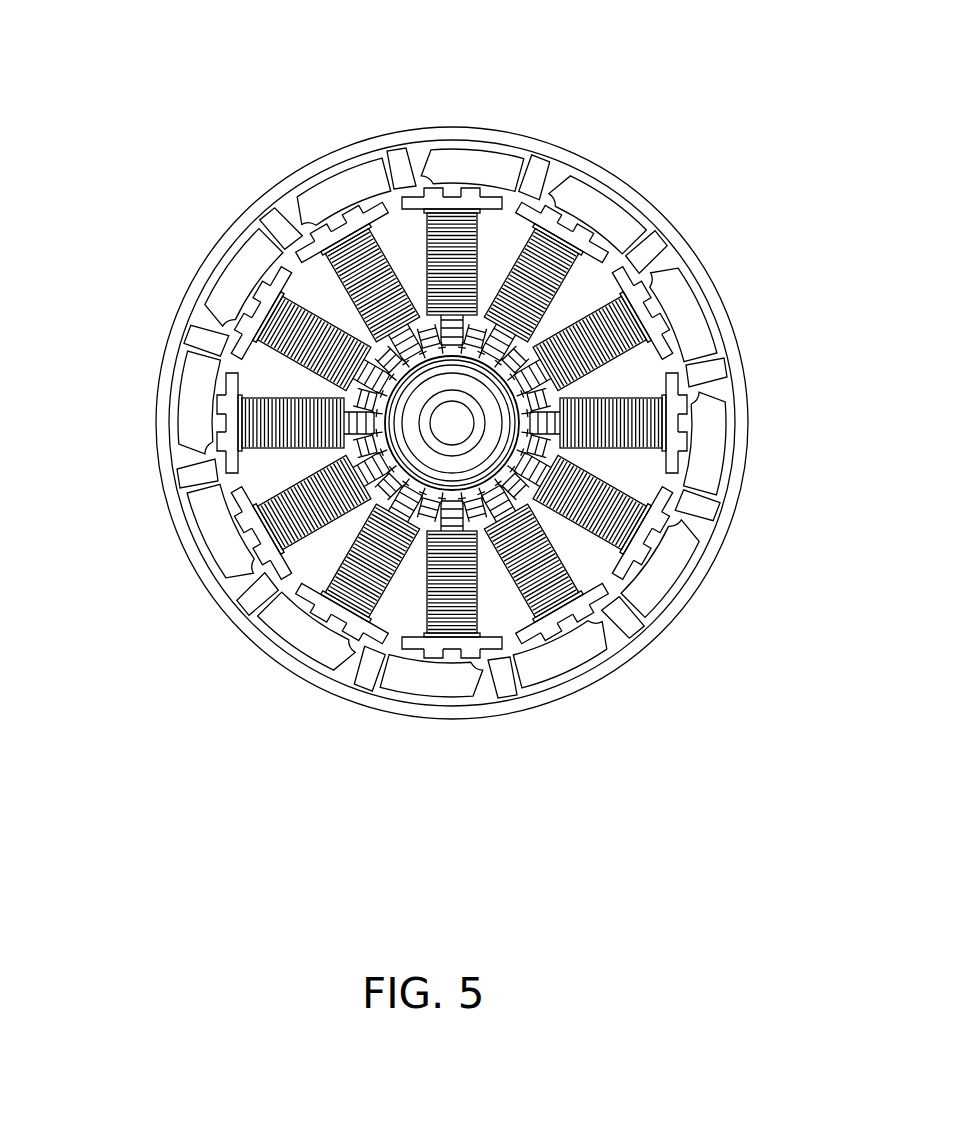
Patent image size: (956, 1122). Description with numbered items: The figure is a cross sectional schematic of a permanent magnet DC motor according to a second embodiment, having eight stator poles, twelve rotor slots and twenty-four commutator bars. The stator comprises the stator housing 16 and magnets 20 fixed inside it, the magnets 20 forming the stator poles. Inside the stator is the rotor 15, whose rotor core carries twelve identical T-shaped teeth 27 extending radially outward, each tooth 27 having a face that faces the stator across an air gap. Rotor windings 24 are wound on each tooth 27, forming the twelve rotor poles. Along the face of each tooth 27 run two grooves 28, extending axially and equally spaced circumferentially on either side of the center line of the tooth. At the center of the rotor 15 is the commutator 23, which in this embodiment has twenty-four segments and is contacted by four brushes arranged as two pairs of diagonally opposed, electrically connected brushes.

The rotor 15 is at (235, 336).
The stator housing 16 is at (322, 680).
The magnets 20 is at (566, 190).
The commutator 23 is at (432, 525).
The rotor windings 24 is at (467, 597).
The T-shaped teeth 27 is at (563, 613).
The grooves 28 is at (260, 560).